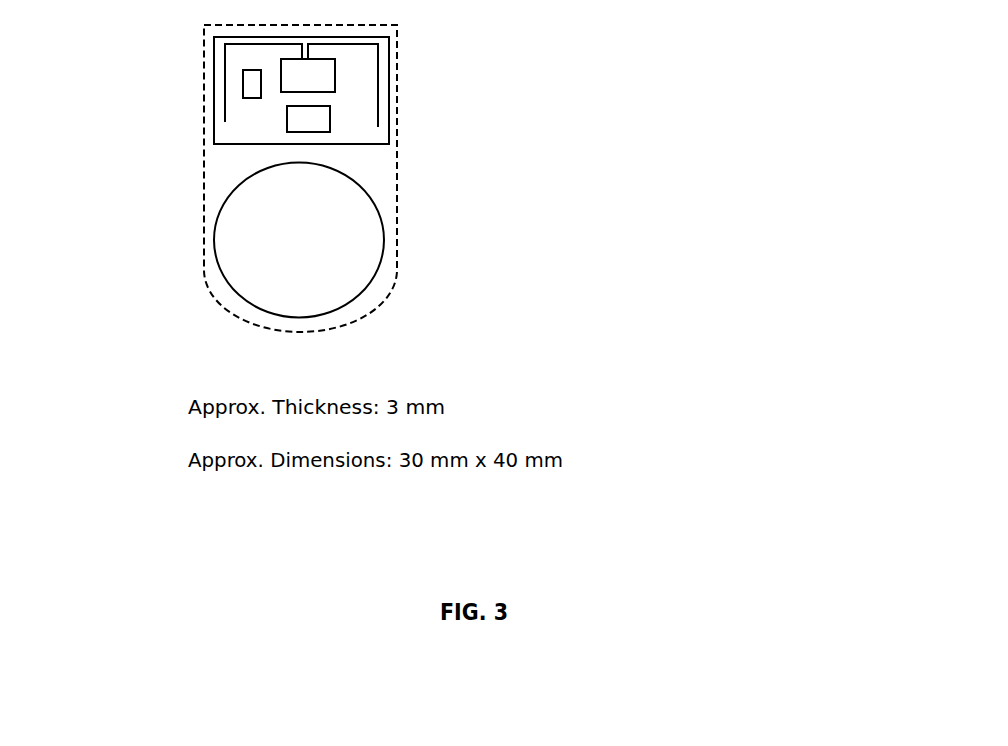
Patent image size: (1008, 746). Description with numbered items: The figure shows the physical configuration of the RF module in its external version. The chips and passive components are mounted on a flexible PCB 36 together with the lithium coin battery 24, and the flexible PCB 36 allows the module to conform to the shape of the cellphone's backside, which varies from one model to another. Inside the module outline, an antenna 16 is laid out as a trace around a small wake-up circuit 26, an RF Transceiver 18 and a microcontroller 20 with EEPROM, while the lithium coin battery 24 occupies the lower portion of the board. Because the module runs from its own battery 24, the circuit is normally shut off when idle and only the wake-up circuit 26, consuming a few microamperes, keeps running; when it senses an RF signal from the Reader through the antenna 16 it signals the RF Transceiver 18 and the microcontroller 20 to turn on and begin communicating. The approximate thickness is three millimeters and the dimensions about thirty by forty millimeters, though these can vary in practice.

The antenna 16 is at (223, 65).
The RF Transceiver 18 is at (323, 75).
The microcontroller 20 is at (314, 119).
The lithium coin battery 24 is at (328, 275).
The wake-up circuit 26 is at (240, 95).
The flexible PCB 36 is at (397, 222).